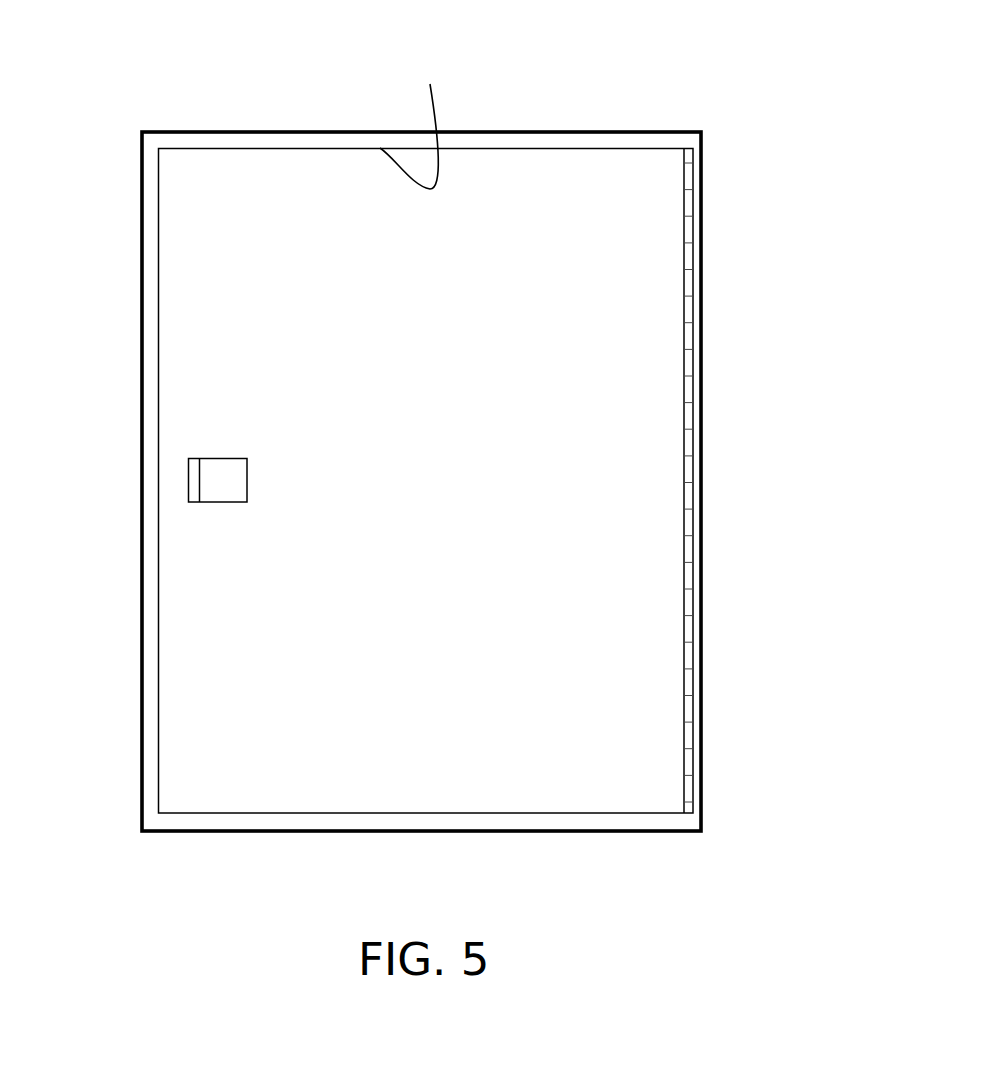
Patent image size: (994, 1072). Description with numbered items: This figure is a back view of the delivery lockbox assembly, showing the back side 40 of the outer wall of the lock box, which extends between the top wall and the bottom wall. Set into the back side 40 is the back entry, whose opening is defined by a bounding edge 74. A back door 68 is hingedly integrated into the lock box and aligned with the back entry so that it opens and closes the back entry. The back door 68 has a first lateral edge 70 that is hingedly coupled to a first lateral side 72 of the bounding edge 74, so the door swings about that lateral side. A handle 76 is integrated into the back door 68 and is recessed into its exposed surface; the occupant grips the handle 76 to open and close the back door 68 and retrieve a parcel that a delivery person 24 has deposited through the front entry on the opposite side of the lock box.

The delivery person 24 is at (159, 198).
The back side 40 is at (545, 135).
The back door 68 is at (590, 790).
The first lateral edge 70 is at (692, 330).
The first lateral side 72 is at (693, 203).
The bounding edge 74 is at (419, 116).
The handle 76 is at (196, 462).